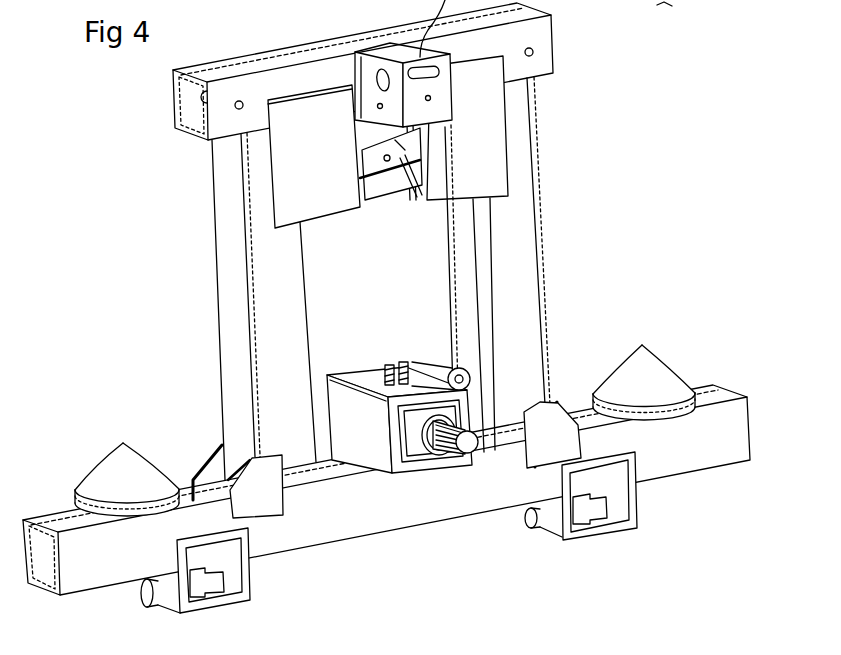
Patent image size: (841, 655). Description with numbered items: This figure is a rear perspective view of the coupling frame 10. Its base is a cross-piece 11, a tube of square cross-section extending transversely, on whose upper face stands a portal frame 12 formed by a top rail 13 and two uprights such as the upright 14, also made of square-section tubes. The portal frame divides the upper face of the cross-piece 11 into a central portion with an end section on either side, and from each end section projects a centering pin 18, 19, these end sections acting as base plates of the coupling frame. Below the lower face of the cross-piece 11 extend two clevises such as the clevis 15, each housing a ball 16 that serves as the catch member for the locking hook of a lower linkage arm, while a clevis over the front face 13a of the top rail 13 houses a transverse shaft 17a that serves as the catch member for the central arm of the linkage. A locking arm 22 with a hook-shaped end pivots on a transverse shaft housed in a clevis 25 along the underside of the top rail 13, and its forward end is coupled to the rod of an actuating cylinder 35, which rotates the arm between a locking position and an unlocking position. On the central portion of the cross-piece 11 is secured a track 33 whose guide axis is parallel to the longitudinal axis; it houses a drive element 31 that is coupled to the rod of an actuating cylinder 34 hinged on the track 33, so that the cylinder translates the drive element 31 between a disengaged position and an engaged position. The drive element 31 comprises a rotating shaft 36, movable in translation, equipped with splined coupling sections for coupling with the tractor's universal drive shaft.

The coupling frame 10 is at (189, 257).
The cross-piece 11 is at (300, 556).
The portal frame 12 is at (214, 319).
The top rail 13 is at (166, 96).
The front face of the top rail 13a is at (224, 128).
The upright 14 is at (513, 266).
The clevis 15 is at (247, 570).
The ball 16 is at (187, 562).
The transverse shaft 17a is at (412, 72).
The centering pin 18 is at (95, 451).
The centering pin 19 is at (682, 365).
The locking arm 22 is at (370, 172).
The clevis 25 is at (408, 185).
The drive element 31 is at (421, 460).
The track 33 is at (360, 448).
The actuating cylinder 34 is at (423, 377).
The actuating cylinder 35 is at (413, 135).
The rotating shaft 36 is at (455, 425).